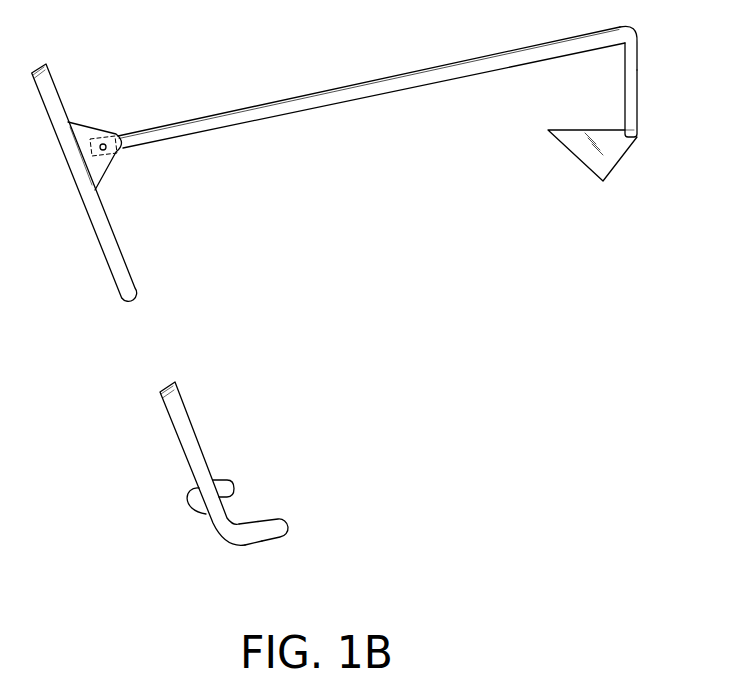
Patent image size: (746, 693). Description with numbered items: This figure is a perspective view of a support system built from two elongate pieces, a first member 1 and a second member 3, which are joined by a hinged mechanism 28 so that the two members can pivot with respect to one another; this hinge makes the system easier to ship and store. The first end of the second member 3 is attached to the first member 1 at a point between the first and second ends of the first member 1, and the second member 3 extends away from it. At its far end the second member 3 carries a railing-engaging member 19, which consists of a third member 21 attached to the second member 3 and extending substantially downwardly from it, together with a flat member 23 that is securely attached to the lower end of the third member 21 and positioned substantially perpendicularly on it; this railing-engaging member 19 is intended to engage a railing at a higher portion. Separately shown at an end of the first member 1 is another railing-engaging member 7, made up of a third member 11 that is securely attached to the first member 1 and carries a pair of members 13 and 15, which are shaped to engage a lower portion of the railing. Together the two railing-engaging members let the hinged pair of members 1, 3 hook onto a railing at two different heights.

The first member 1 is at (57, 90).
The second member 3 is at (307, 102).
The railing-engaging member 7 is at (251, 521).
The third member 11 is at (237, 547).
The pair member 13 is at (228, 480).
The pair member 15 is at (287, 525).
The railing-engaging member 19 is at (638, 63).
The third member 21 is at (638, 97).
The flat member 23 is at (573, 158).
The hinged mechanism 28 is at (98, 165).